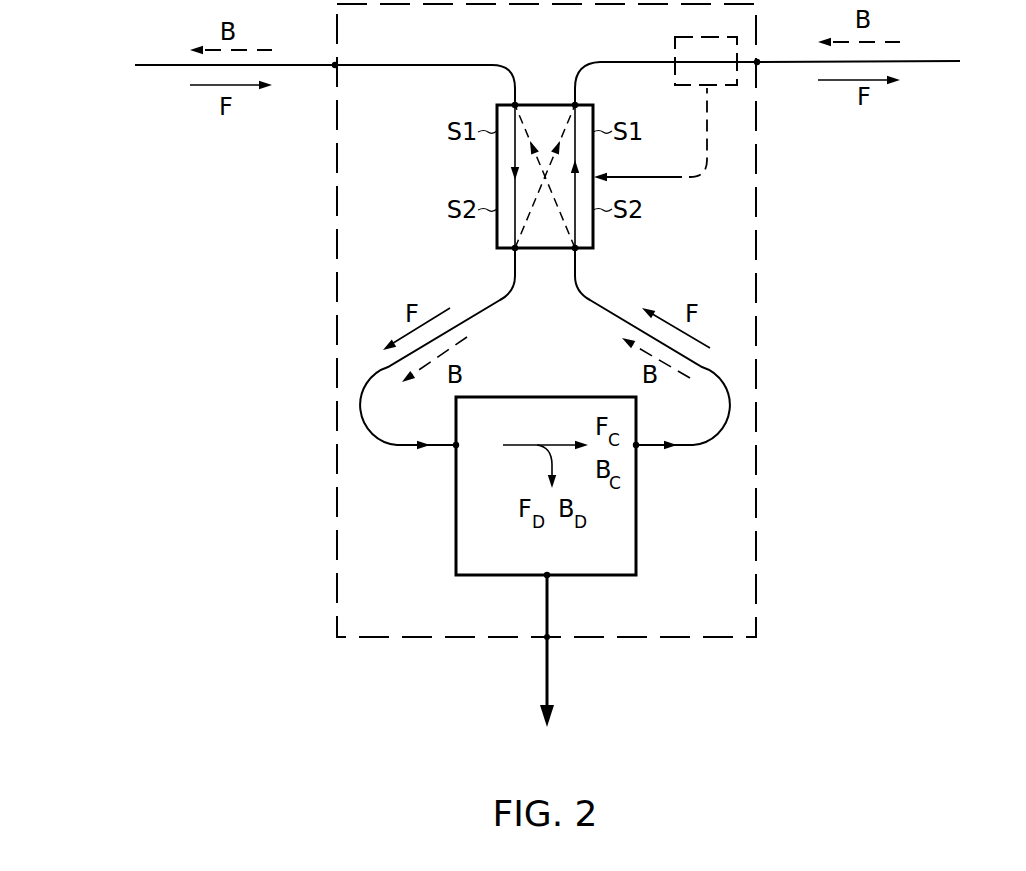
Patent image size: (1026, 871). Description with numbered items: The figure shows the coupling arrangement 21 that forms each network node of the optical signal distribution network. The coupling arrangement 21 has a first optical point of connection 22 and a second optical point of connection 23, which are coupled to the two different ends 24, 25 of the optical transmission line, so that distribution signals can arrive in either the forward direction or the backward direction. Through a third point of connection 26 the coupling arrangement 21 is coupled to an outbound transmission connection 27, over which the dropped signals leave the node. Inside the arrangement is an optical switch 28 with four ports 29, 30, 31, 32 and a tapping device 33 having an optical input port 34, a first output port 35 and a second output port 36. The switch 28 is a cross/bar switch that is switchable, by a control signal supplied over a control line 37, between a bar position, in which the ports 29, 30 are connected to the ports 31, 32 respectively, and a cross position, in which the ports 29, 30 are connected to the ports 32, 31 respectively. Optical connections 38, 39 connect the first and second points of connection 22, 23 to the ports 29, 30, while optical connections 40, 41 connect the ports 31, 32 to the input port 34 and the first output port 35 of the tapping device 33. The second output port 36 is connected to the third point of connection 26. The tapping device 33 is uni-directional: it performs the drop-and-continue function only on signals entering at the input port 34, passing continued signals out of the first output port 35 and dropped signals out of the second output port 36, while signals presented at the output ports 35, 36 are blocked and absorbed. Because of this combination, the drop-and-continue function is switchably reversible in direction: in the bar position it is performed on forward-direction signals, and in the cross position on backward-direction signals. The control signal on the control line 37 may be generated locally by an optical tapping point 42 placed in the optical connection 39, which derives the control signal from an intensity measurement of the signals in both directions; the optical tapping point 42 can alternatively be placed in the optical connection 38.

The coupling arrangement 21 is at (758, 522).
The first optical point of connection 22 is at (334, 64).
The second optical point of connection 23 is at (758, 62).
The end of the optical transmission line 24 is at (158, 67).
The end of the optical transmission line 25 is at (931, 63).
The third point of connection 26 is at (545, 640).
The outbound transmission connection 27 is at (549, 668).
The optical switch 28 is at (497, 178).
The port 29 is at (513, 104).
The port 30 is at (577, 104).
The port 31 is at (514, 253).
The port 32 is at (576, 253).
The tapping device 33 is at (640, 550).
The optical input port 34 is at (455, 448).
The first output port 35 is at (637, 448).
The second output port 36 is at (544, 578).
The control line 37 is at (665, 176).
The optical connection 38 is at (465, 62).
The optical connection 39 is at (620, 62).
The optical connection 40 is at (497, 301).
The optical connection 41 is at (592, 301).
The optical tapping point 42 is at (732, 88).